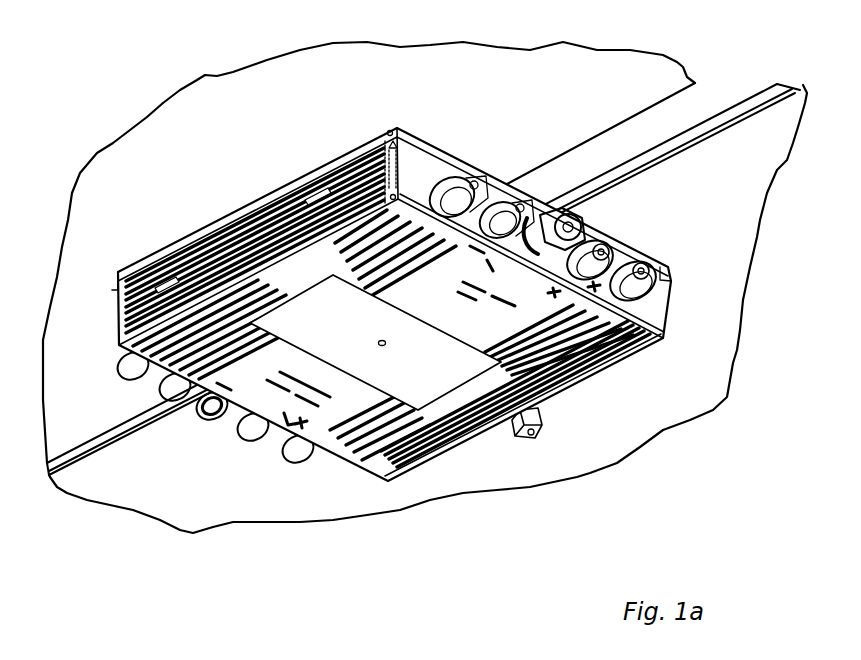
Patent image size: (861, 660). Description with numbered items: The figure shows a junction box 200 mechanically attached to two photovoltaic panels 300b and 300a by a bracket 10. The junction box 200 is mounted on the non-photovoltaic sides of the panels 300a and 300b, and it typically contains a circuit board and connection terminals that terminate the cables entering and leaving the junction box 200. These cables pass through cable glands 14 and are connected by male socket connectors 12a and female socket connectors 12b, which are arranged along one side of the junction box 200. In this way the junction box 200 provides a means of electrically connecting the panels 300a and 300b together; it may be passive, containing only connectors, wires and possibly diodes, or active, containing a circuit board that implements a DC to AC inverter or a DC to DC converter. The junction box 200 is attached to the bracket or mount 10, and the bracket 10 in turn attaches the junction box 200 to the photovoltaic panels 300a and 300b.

The bracket 10 is at (447, 149).
The male socket connectors 12a is at (480, 178).
The female socket connectors 12b is at (608, 240).
The cable glands 14 is at (572, 213).
The junction box 200 is at (578, 383).
The photovoltaic panel 300a is at (587, 475).
The photovoltaic panel 300b is at (208, 78).